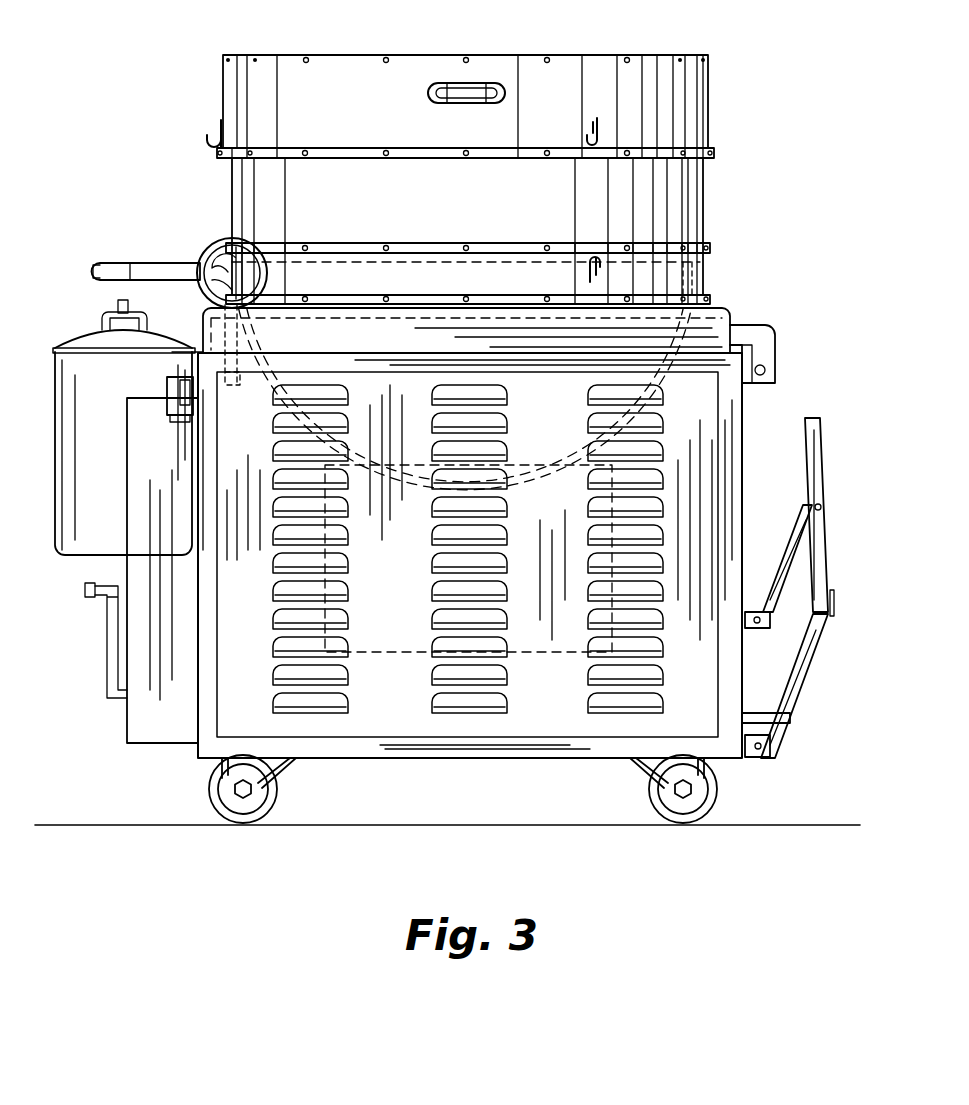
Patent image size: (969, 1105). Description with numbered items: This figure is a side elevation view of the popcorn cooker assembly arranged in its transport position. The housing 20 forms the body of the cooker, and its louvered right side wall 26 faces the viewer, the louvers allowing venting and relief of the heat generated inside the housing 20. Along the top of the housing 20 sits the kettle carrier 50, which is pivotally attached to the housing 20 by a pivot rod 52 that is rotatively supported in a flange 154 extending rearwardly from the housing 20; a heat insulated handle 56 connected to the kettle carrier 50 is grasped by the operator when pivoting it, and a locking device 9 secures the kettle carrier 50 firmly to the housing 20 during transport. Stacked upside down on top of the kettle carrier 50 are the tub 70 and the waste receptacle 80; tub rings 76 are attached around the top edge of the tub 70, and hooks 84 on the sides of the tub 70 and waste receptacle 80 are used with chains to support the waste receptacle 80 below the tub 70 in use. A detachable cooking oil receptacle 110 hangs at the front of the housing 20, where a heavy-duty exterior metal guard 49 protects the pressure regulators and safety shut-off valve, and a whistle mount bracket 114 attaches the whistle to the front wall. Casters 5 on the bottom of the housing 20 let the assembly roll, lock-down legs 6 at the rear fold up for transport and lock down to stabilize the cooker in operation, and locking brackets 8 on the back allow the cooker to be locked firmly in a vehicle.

The casters 5 is at (280, 788).
The legs 6 is at (797, 682).
The locking brackets 8 is at (787, 720).
The locking device 9 is at (212, 243).
The housing 20 is at (730, 440).
The right side wall 26 is at (552, 700).
The exterior metal guard 49 is at (130, 727).
The kettle carrier 50 is at (725, 309).
The pivot rod 52 is at (765, 368).
The heat insulated handle 56 is at (142, 263).
The tub 70 is at (685, 193).
The tub rings 76 is at (716, 150).
The waste receptacle 80 is at (688, 104).
The hooks 84 is at (590, 118).
The cooking oil receptacle 110 is at (87, 543).
The whistle mount bracket 114 is at (173, 388).
The flange 154 is at (770, 330).